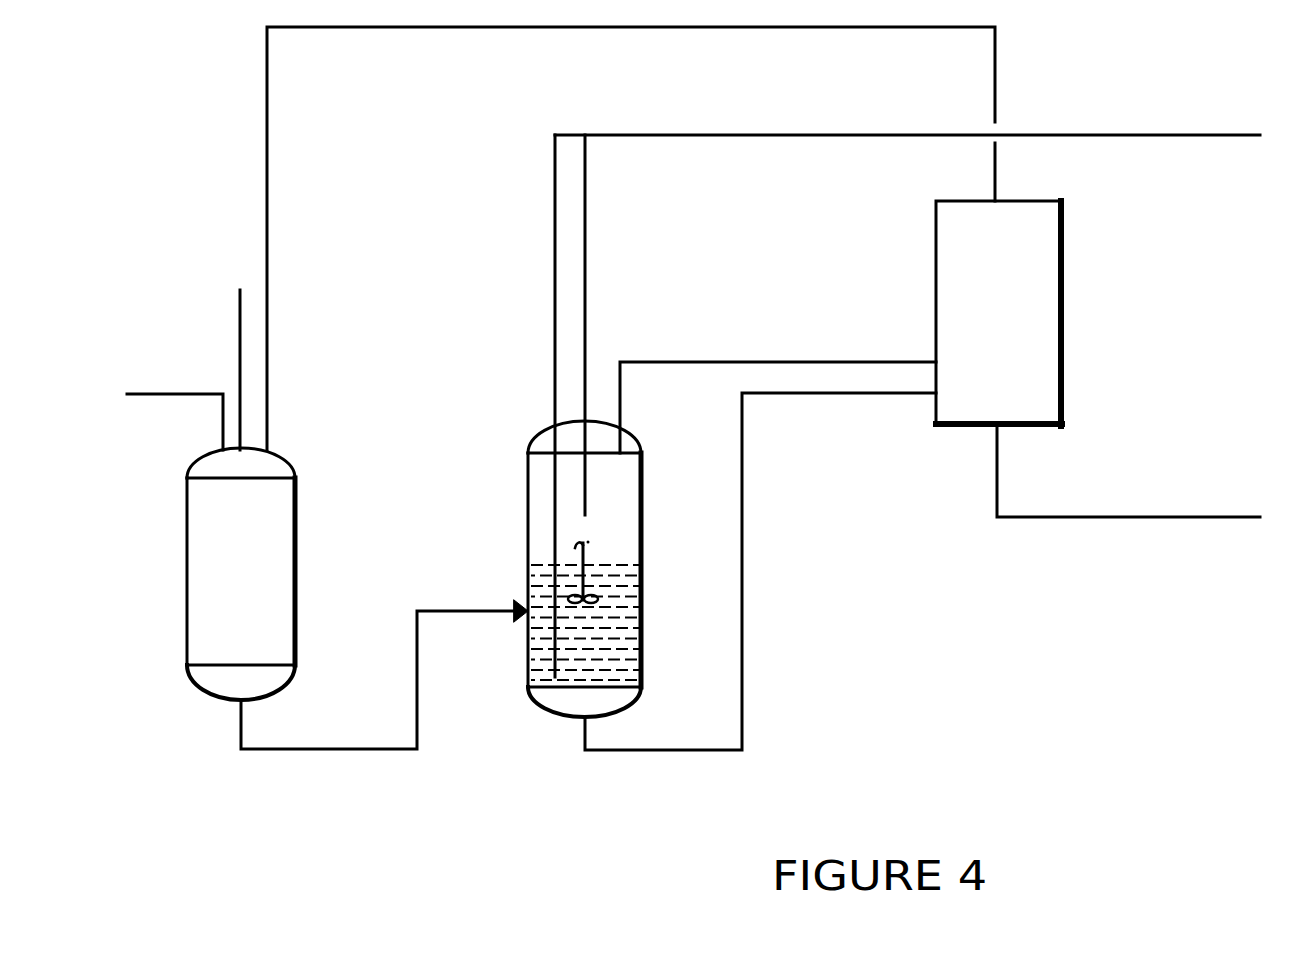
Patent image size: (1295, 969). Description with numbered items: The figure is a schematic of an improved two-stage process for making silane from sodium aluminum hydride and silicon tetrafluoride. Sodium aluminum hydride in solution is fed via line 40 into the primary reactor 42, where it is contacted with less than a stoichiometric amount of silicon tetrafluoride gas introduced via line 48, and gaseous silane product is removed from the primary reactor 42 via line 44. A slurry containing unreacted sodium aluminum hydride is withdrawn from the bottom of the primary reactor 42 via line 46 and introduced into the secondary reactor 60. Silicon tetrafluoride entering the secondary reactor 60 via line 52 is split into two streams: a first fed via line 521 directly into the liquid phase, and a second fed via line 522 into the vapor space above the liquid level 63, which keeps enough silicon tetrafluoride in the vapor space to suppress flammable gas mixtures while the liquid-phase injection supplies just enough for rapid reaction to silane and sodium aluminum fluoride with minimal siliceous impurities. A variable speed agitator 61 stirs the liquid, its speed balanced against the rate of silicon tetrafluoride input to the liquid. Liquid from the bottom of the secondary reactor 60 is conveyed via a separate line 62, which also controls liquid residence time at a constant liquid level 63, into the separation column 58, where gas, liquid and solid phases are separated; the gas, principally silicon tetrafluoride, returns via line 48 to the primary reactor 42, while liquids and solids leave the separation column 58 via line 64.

The line 40 is at (160, 394).
The primary reactor 42 is at (253, 557).
The line 44 is at (240, 348).
The line 46 is at (312, 749).
The line 48 is at (267, 283).
The line 52 is at (792, 135).
The line 521 is at (555, 250).
The line 522 is at (585, 220).
The separation column 58 is at (1007, 267).
The secondary reactor 60 is at (641, 507).
The variable speed agitator 61 is at (587, 557).
The line 62 is at (742, 643).
The liquid level 63 is at (548, 565).
The line 64 is at (1158, 517).